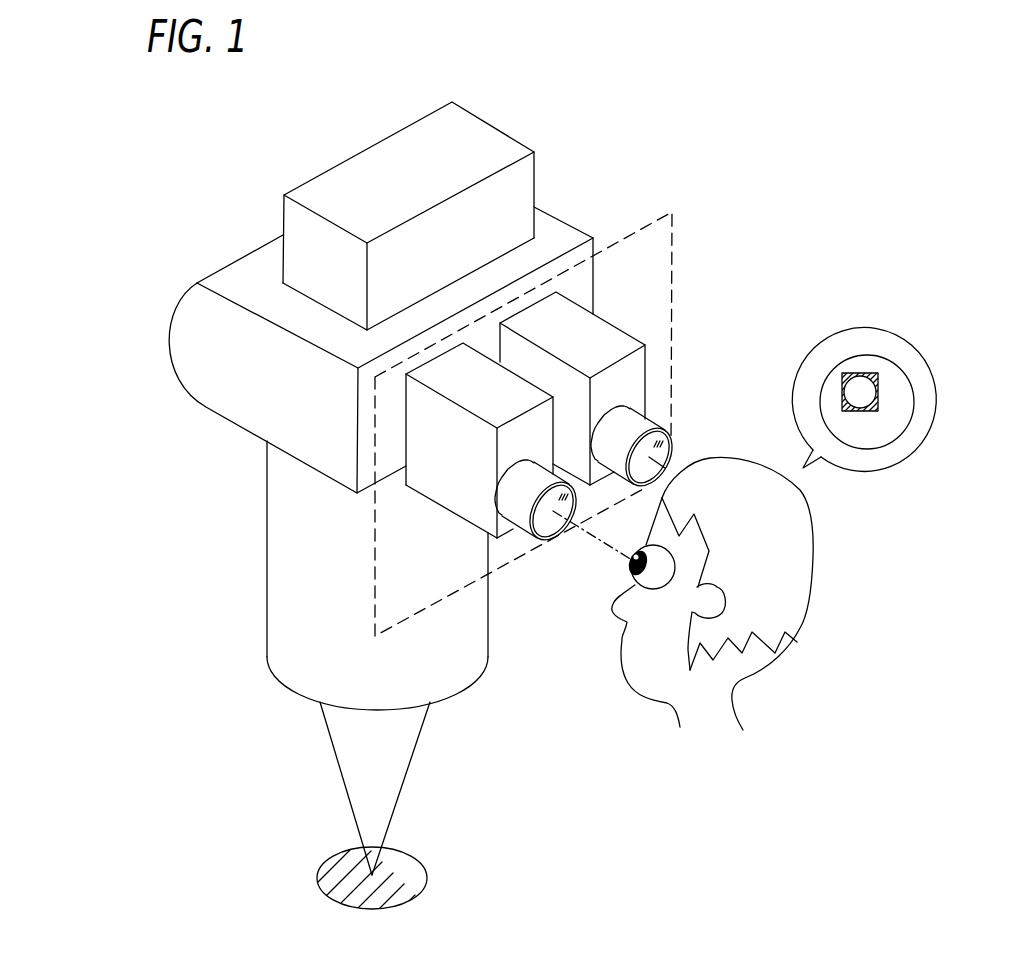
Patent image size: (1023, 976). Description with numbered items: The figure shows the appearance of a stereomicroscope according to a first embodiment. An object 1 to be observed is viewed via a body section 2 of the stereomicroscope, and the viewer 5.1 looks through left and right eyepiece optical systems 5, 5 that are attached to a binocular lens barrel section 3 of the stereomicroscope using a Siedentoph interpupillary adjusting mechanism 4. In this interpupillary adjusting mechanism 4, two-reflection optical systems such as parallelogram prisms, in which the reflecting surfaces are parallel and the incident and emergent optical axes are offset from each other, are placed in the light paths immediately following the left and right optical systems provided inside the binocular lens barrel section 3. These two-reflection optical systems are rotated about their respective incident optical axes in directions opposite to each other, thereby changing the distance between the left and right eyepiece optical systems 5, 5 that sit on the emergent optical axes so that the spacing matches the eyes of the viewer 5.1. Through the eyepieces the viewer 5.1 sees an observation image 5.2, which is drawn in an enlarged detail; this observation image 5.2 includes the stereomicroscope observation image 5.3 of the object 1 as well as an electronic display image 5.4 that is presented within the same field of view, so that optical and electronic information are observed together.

The object 1 is at (400, 853).
The body section 2 is at (463, 653).
The binocular lens barrel section 3 is at (183, 333).
The Siedentoph interpupillary adjusting mechanism 4 is at (672, 270).
The eyepiece optical system 5 is at (673, 448).
The viewer 5.1 is at (777, 587).
The observation image 5.2 is at (882, 345).
The stereomicroscope observation image 5.3 is at (893, 418).
The electronic display image 5.4 is at (842, 382).